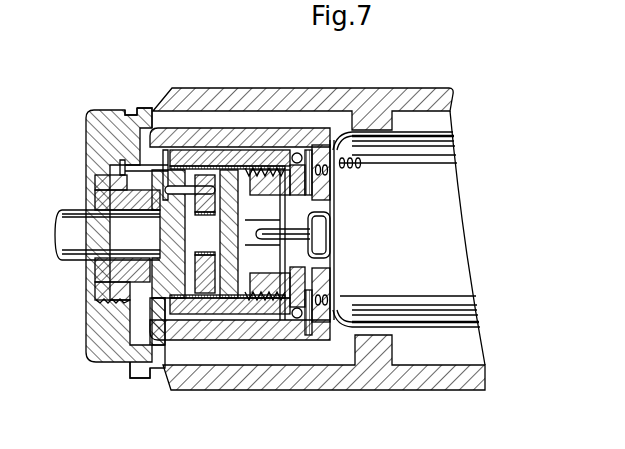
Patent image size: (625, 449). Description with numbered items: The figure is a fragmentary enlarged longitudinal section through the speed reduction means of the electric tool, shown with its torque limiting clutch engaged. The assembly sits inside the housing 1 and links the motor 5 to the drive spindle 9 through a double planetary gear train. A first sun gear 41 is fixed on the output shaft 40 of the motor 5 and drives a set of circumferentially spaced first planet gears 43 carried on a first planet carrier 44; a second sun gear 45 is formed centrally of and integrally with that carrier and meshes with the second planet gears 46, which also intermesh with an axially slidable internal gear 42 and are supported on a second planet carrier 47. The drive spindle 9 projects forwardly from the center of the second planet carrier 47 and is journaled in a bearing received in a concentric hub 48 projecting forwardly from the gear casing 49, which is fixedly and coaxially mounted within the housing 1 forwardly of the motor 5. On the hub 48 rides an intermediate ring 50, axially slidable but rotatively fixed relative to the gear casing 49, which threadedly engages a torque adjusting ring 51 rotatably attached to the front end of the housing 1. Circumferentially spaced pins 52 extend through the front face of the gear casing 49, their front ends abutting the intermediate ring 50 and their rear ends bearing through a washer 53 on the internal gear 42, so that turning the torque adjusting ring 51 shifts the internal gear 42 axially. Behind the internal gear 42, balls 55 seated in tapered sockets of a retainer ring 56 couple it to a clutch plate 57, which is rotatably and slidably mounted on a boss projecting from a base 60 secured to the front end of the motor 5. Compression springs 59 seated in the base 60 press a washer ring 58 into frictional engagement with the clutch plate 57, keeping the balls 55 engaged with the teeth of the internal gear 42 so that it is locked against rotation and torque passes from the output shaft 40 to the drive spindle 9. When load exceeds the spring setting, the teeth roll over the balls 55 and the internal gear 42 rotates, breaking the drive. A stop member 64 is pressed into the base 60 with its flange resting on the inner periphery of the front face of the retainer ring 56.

The housing 1 is at (413, 96).
The motor 5 is at (417, 182).
The drive spindle 9 is at (80, 237).
The output shaft 40 is at (290, 233).
The first sun gear 41 is at (262, 250).
The internal gear 42 is at (250, 168).
The first planet gears 43 is at (262, 172).
The first planet carrier 44 is at (232, 183).
The second sun gear 45 is at (208, 252).
The second planet gears 46 is at (198, 150).
The second planet carrier 47 is at (135, 330).
The hub 48 is at (108, 198).
The gear casing 49 is at (135, 105).
The intermediate ring 50 is at (95, 298).
The torque adjusting ring 51 is at (90, 155).
The pins 52 is at (128, 148).
The washer 53 is at (157, 143).
The balls 55 is at (300, 155).
The retainer ring 56 is at (305, 330).
The clutch plate 57 is at (307, 323).
The washer ring 58 is at (310, 327).
The compression springs 59 is at (336, 146).
The base 60 is at (332, 277).
The stop member 64 is at (285, 303).